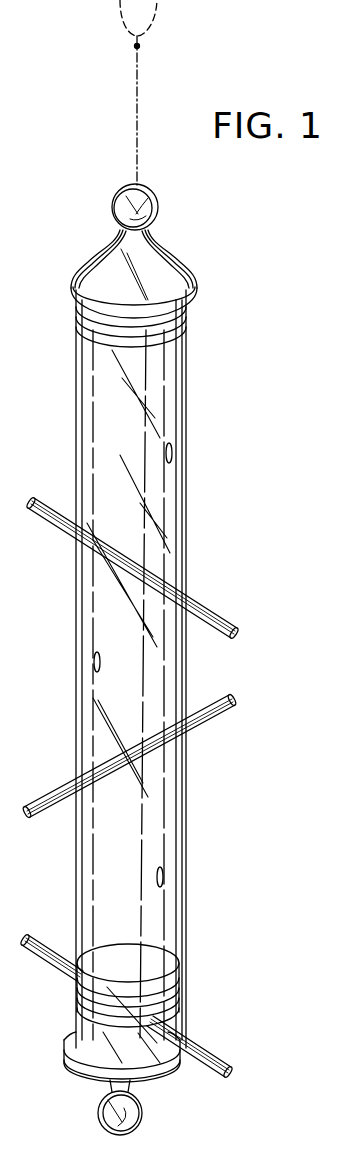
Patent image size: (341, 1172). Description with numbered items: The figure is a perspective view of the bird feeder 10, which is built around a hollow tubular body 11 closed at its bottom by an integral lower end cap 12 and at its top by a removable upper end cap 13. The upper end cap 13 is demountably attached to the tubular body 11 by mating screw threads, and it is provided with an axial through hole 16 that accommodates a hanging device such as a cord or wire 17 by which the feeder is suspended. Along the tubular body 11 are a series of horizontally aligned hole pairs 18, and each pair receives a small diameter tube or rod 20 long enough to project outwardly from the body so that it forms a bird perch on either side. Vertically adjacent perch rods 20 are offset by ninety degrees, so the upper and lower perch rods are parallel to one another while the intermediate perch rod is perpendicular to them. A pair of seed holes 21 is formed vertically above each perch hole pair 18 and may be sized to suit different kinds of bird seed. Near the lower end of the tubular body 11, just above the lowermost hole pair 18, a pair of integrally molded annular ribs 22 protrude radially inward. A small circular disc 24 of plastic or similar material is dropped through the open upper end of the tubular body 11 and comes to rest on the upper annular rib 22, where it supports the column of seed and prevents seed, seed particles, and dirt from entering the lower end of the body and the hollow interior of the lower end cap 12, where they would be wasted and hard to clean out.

The feeder 10 is at (206, 532).
The hollow tubular body 11 is at (173, 381).
The lower end cap 12 is at (108, 1102).
The upper end cap 13 is at (176, 282).
The axial through hole 16 is at (144, 190).
The cord or wire 17 is at (134, 128).
The hole pairs 18 is at (172, 599).
The perch rod 20 is at (219, 638).
The seed holes 21 is at (173, 454).
The annular ribs 22 is at (68, 1060).
The circular disc 24 is at (183, 968).